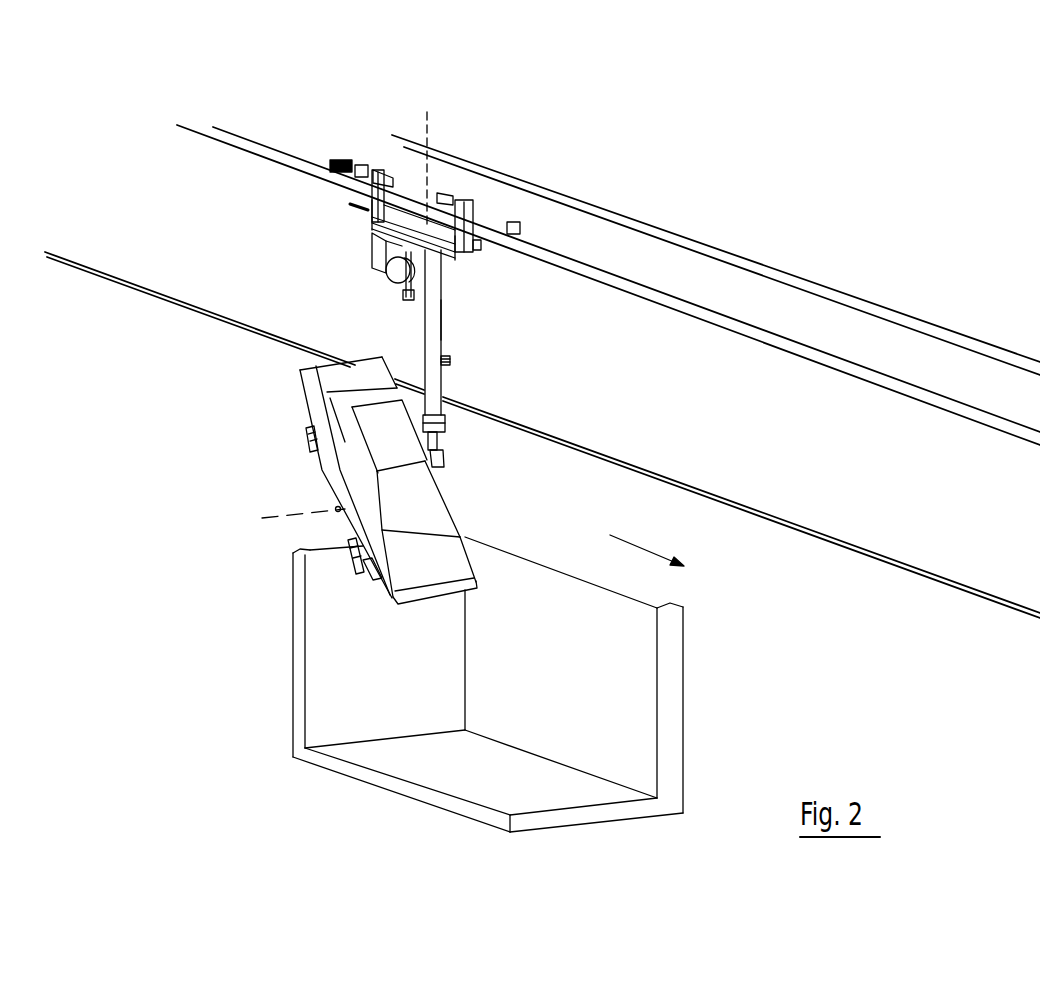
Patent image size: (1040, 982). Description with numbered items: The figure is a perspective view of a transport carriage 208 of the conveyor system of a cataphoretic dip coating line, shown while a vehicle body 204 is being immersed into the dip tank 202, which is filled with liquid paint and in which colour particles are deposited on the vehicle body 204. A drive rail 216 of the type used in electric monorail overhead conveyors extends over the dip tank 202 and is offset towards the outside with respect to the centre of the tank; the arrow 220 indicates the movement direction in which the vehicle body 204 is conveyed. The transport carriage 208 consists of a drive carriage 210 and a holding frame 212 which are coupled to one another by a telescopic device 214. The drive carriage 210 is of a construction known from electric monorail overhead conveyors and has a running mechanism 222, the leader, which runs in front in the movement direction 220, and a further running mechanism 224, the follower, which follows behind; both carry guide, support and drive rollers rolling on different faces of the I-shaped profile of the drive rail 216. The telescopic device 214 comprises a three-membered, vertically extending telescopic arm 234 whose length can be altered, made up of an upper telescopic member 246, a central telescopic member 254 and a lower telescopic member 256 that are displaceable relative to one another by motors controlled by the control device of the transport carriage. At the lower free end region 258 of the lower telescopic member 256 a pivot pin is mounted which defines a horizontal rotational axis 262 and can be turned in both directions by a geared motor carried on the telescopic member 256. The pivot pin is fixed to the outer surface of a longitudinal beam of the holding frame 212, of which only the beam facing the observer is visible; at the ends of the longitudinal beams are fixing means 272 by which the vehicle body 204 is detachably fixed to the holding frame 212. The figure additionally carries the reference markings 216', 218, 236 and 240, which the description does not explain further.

The dip tank 202 is at (683, 662).
The vehicle body 204 is at (300, 373).
The transport carriage 208 is at (457, 318).
The drive carriage 210 is at (348, 204).
The holding frame 212 is at (316, 492).
The telescopic device 214 is at (398, 325).
The drive rail 216 is at (608, 291).
The second guide rail 216' is at (716, 255).
The lower guide rail 218 is at (913, 567).
The arrow 220 is at (657, 553).
The running mechanism (leader) 222 is at (455, 200).
The running mechanism (follower) 224 is at (381, 170).
The telescopic arm 234 is at (446, 279).
The drive motor 236 is at (380, 243).
The vertical axis 240 is at (428, 114).
The upper telescopic member 246 is at (434, 338).
The central telescopic member 254 is at (440, 423).
The lower telescopic member 256 is at (437, 447).
The lower free end region 258 is at (449, 468).
The rotational axis 262 is at (290, 520).
The fixing means 272 is at (305, 440).